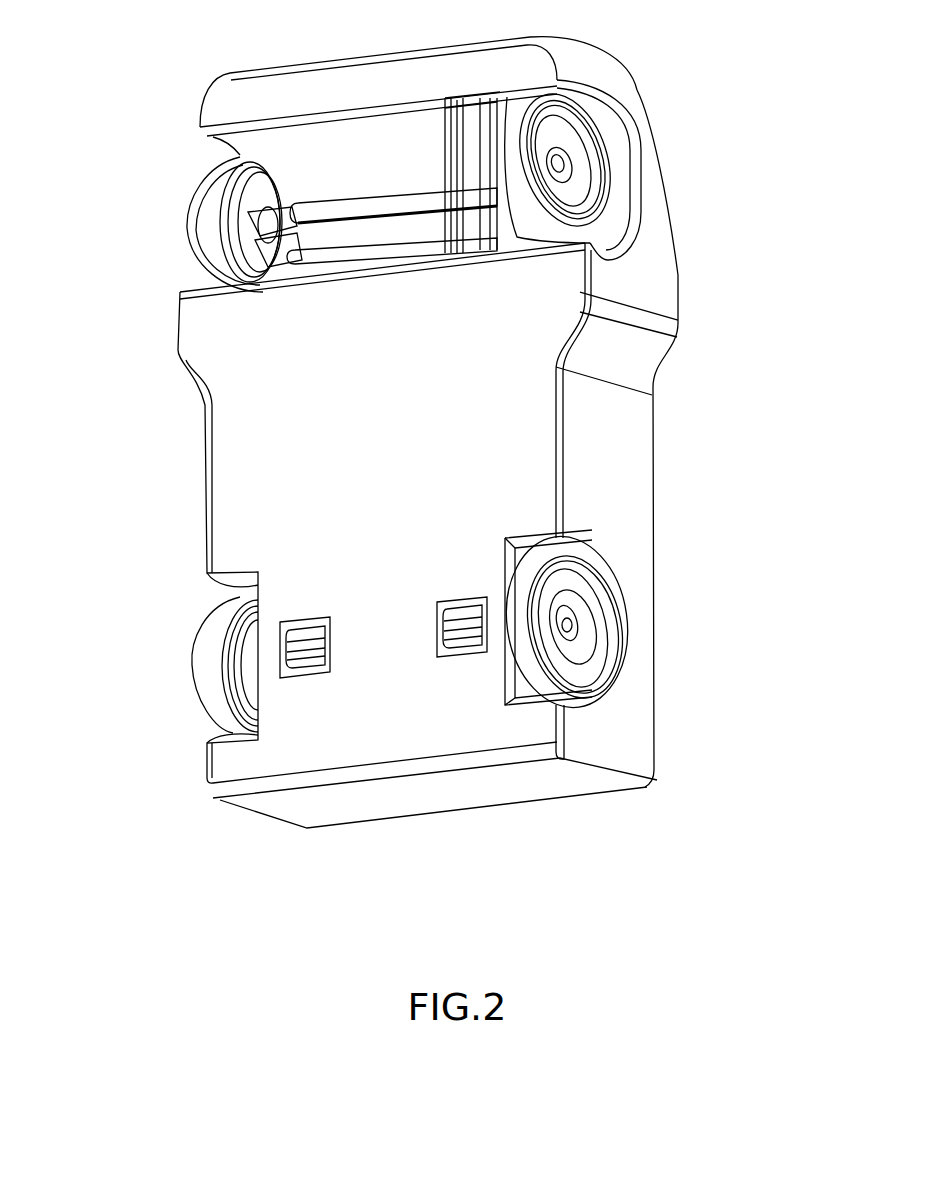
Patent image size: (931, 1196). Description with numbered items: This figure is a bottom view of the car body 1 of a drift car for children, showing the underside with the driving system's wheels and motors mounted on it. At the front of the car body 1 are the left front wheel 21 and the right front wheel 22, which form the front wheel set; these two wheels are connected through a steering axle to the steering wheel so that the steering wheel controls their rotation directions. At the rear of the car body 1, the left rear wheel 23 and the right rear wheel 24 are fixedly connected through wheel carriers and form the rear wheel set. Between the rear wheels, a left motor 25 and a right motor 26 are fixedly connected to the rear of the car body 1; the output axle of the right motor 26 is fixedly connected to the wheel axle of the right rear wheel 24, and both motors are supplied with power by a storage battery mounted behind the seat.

The car body 1 is at (288, 432).
The left front wheel 21 is at (520, 177).
The right front wheel 22 is at (214, 234).
The left rear wheel 23 is at (522, 622).
The right rear wheel 24 is at (215, 667).
The left motor 25 is at (465, 655).
The right motor 26 is at (310, 657).